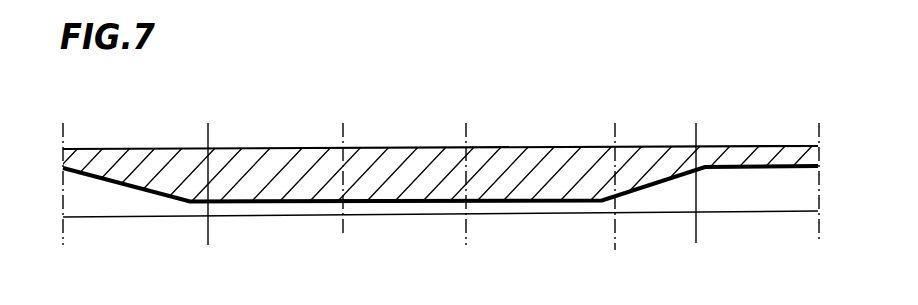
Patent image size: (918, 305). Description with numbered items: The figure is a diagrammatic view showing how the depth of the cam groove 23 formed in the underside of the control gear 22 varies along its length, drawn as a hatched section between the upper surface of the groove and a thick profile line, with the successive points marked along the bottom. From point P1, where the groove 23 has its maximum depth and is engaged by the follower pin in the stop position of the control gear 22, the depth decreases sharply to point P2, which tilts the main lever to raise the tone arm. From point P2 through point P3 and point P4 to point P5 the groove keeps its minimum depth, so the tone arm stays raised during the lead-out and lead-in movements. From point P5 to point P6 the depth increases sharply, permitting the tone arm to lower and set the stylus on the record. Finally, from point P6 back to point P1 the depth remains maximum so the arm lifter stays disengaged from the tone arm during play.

The control gear 22 is at (162, 144).
The cam groove 23 is at (172, 210).
The point P1 is at (437, 205).
The point P2 is at (207, 203).
The point P3 is at (337, 202).
The point P4 is at (464, 203).
The point P5 is at (610, 205).
The point P6 is at (694, 204).